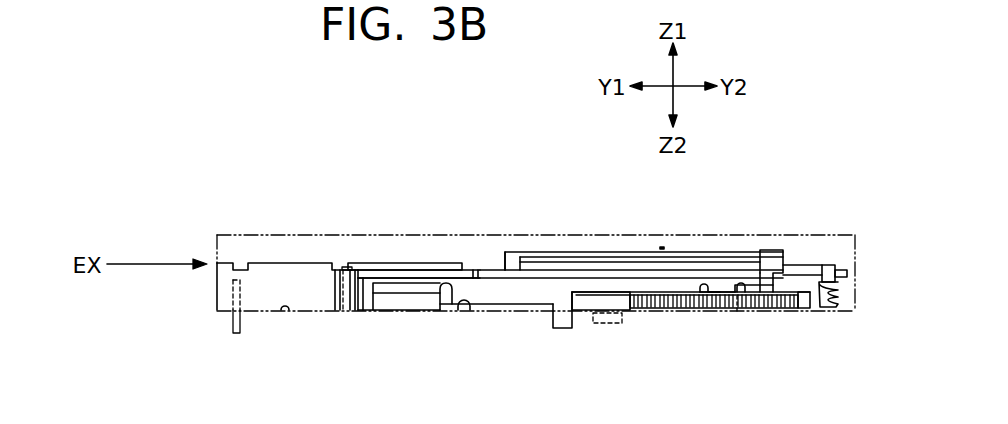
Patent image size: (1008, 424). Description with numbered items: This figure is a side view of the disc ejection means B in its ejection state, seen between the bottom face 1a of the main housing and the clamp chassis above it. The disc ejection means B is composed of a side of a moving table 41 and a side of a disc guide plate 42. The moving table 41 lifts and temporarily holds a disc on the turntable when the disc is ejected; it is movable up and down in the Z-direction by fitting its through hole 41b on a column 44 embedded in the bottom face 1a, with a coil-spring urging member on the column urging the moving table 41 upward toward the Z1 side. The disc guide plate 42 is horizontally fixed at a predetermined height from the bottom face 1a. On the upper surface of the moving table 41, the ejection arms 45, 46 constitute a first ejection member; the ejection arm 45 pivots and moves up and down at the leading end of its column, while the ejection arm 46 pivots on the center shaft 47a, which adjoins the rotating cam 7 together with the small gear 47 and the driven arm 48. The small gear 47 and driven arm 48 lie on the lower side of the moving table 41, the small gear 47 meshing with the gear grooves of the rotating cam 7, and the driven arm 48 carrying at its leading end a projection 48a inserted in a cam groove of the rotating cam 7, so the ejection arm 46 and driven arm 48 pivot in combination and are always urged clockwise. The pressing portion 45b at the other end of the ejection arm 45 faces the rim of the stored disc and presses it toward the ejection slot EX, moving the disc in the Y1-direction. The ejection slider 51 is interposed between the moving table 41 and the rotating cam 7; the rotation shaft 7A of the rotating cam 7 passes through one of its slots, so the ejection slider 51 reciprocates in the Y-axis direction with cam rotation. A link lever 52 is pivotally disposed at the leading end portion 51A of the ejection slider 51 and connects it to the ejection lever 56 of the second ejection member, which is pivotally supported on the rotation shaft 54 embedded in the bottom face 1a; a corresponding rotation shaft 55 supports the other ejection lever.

The bottom face 1a is at (280, 315).
The rotation shaft 54 is at (351, 237).
The disc guide plate 42 is at (388, 276).
The ejection lever 56 is at (432, 263).
The pressing portion 45b is at (505, 253).
The ejection arm 45 is at (570, 257).
The ejection arm 46 is at (619, 269).
The driven arm 48 is at (748, 285).
The center shaft 47a is at (775, 250).
The column 44 is at (827, 265).
The through hole 41b is at (847, 273).
The rotation shaft 55 is at (833, 302).
The small gear 47 is at (770, 310).
The projection 48a is at (737, 312).
The rotating cam 7 is at (665, 313).
The rotation shaft 7A is at (700, 312).
The moving table 41 is at (640, 273).
The ejection slider 51 is at (582, 307).
The leading end portion 51A is at (467, 313).
The link lever 52 is at (408, 293).
The disc ejection means B is at (537, 230).